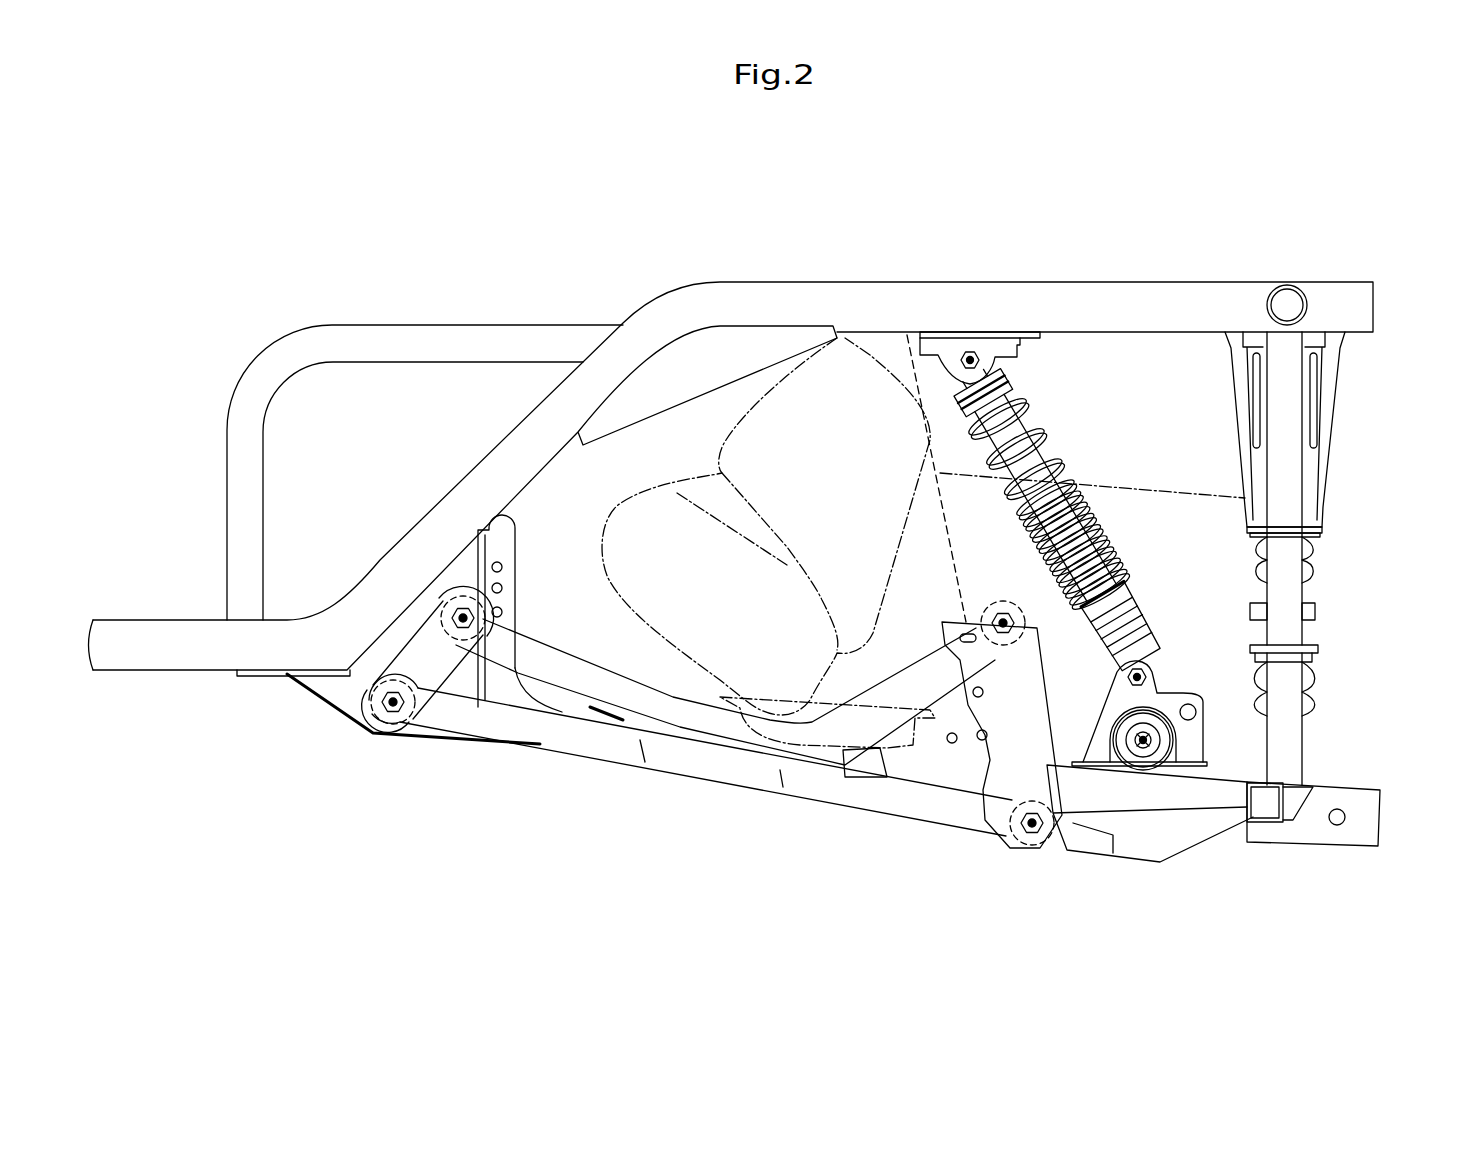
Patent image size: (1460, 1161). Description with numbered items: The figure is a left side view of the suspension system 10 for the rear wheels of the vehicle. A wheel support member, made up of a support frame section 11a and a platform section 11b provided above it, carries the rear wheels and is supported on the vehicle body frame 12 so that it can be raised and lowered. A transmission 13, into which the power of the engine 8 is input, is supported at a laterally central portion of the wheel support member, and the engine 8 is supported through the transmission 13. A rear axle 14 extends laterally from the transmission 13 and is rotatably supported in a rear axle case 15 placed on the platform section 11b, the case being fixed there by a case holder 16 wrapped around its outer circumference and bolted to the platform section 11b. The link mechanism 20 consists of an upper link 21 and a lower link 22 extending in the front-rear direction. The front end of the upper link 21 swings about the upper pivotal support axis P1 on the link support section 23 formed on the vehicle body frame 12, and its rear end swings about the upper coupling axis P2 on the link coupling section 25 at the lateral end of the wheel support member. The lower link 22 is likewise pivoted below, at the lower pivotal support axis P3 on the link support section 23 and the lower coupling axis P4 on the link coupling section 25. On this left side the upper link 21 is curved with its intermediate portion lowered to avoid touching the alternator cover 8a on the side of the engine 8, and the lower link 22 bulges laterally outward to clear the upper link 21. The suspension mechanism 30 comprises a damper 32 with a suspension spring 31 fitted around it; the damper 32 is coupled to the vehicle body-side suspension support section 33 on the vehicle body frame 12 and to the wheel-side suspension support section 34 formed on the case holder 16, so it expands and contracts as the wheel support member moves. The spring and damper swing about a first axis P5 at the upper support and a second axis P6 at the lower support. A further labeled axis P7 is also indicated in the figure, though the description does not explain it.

The engine 8 is at (717, 458).
The alternator cover 8a is at (722, 660).
The suspension system 10 is at (372, 823).
The support frame section 11a is at (1185, 795).
The platform section 11b is at (1323, 778).
The vehicle body frame 12 is at (540, 418).
The transmission 13 is at (1147, 490).
The rear axle 14 is at (1140, 770).
The rear axle case 15 is at (1133, 762).
The case holder 16 is at (1186, 703).
The link mechanism 20 is at (715, 634).
The upper link 21 is at (580, 680).
The lower link 22 is at (697, 767).
The link support section 23 is at (400, 656).
The link coupling section 25 is at (987, 705).
The suspension mechanism 30 is at (1057, 447).
The suspension spring 31 is at (1100, 535).
The damper 32 is at (1040, 470).
The vehicle body-side suspension support section 33 is at (969, 352).
The wheel-side suspension support section 34 is at (1116, 702).
The upper pivotal support axis P1 is at (450, 606).
The upper coupling axis P2 is at (1001, 608).
The lower pivotal support axis P3 is at (374, 714).
The lower coupling axis P4 is at (1033, 808).
The first axis P5 is at (978, 349).
The second axis P6 is at (1141, 666).
The pivot point P7 is at (1155, 740).